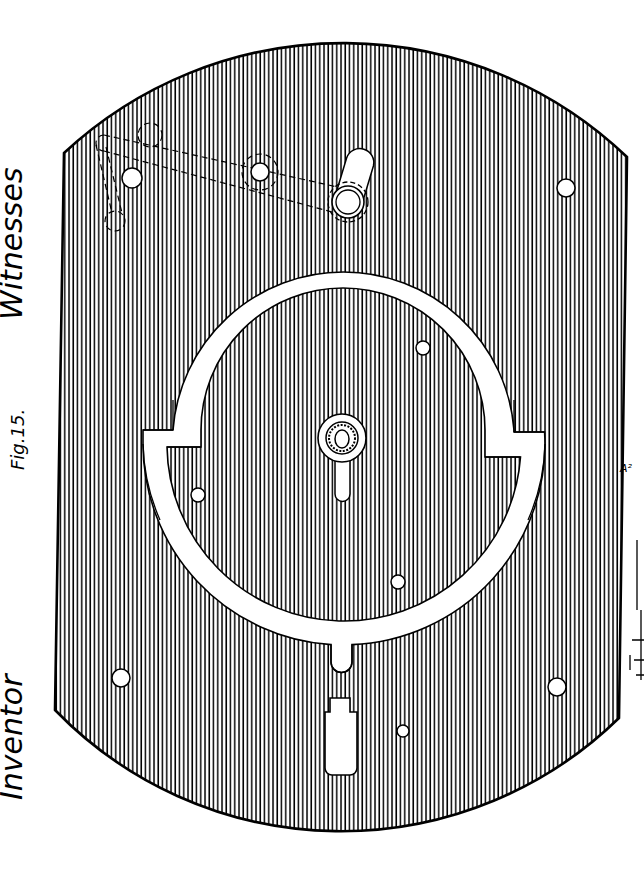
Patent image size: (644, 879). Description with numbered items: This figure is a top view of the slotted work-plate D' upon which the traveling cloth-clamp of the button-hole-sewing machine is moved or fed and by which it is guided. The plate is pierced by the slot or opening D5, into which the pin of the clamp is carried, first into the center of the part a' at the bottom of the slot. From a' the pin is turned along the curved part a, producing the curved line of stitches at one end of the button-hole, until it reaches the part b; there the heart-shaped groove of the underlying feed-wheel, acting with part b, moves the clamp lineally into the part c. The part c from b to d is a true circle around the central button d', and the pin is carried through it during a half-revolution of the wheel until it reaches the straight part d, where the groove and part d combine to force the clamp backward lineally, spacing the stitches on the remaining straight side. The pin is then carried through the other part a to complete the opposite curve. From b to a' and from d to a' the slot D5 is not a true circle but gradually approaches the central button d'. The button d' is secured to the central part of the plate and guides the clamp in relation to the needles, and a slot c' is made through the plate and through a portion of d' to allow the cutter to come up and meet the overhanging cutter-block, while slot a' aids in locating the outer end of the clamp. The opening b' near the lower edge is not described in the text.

The slotted work-plate D' is at (341, 437).
The slot D5 is at (344, 472).
The curved part of slot a is at (344, 482).
The part of slot b is at (172, 437).
The circular part of slot c is at (343, 347).
The straight part of slot d is at (515, 444).
The central button d' is at (342, 427).
The slot c' is at (342, 476).
The part of slot a' is at (347, 651).
The bottom slot b' is at (341, 736).